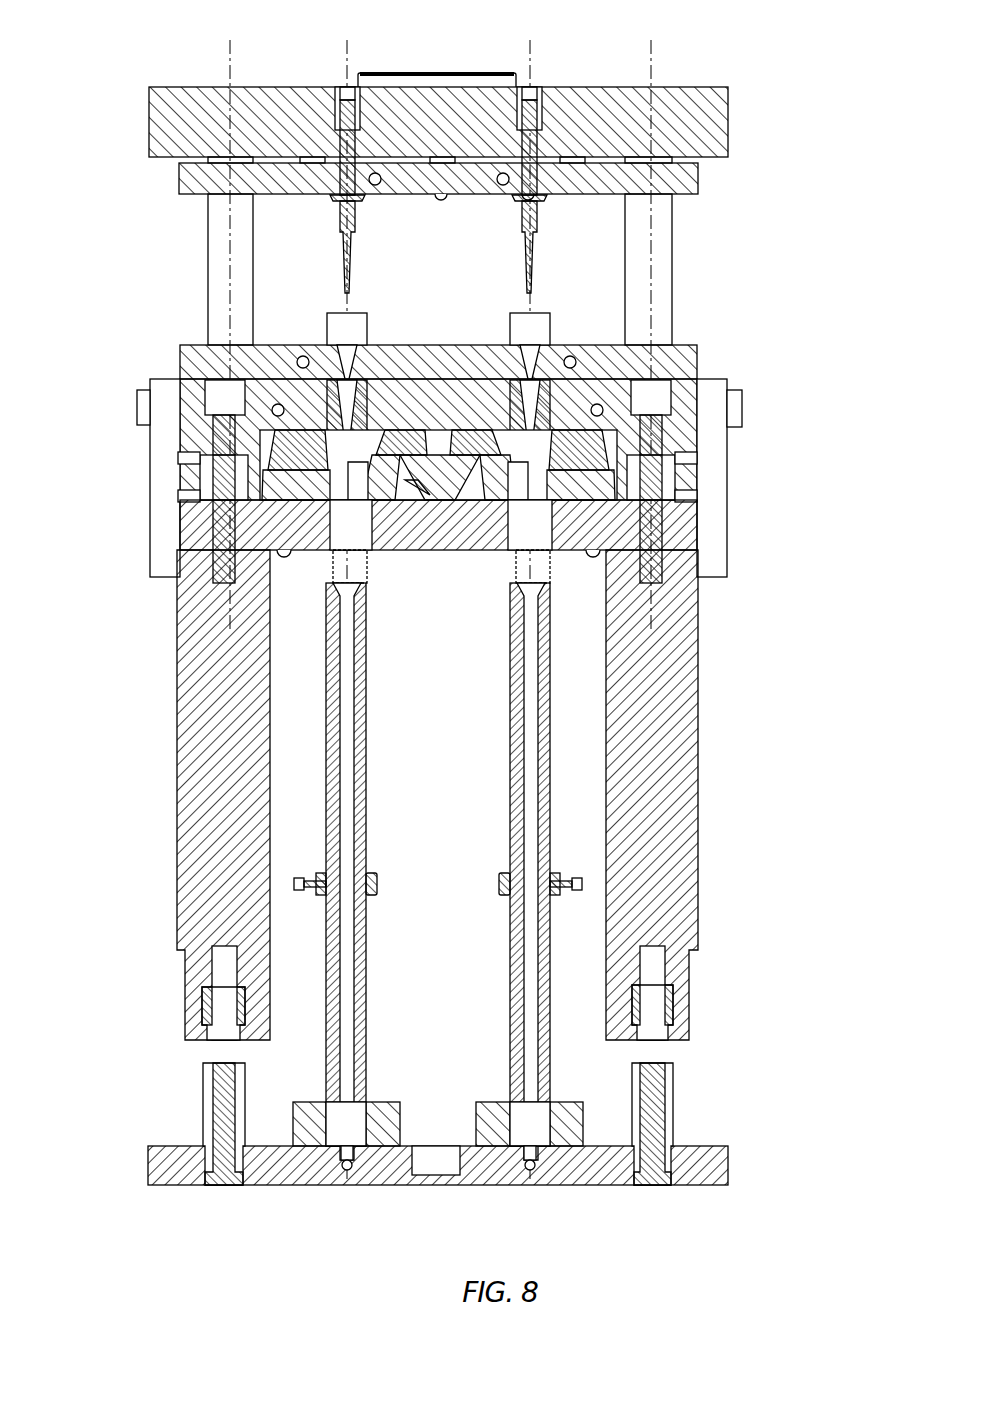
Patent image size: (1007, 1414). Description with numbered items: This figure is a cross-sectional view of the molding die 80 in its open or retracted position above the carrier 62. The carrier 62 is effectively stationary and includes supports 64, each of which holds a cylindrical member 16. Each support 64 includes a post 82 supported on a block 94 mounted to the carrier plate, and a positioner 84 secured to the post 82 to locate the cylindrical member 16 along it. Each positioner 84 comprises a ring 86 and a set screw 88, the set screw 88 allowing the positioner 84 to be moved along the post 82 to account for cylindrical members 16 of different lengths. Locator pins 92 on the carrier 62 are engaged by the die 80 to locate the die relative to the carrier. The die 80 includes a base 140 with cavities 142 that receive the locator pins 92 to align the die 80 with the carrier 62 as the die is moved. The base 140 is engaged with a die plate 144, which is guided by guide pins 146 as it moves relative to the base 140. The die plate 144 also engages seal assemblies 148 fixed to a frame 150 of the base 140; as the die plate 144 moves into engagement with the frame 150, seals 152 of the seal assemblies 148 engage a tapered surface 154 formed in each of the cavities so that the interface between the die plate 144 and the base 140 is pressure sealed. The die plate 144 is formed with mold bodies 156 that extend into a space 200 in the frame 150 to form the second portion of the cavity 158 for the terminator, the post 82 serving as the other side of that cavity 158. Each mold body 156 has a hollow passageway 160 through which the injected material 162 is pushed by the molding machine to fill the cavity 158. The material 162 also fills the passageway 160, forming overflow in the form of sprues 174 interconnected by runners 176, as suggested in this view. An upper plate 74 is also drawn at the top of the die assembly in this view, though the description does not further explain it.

The cylindrical member 16 is at (322, 647).
The carrier 62 is at (740, 1120).
The support 64 is at (560, 1010).
The top clamp plate 74 is at (728, 125).
The molding die 80 is at (742, 570).
The post 82 is at (545, 940).
The positioner 84 is at (300, 898).
The ring 86 is at (374, 876).
The set screw 88 is at (298, 880).
The locator pin 92 is at (203, 1082).
The block 94 is at (375, 1130).
The base 140 is at (677, 848).
The cavity 142 is at (198, 1000).
The die plate 144 is at (680, 423).
The guide pin 146 is at (218, 487).
The seal assembly 148 is at (258, 440).
The frame 150 is at (213, 580).
The seal 152 is at (262, 448).
The tapered surface 154 is at (440, 440).
The mold body 156 is at (312, 398).
The cavity 158 is at (336, 512).
The hollow passageway 160 is at (320, 400).
The injected material 162 is at (535, 243).
The sprue 174 is at (340, 224).
The runner 176 is at (481, 180).
The space 200 is at (372, 455).